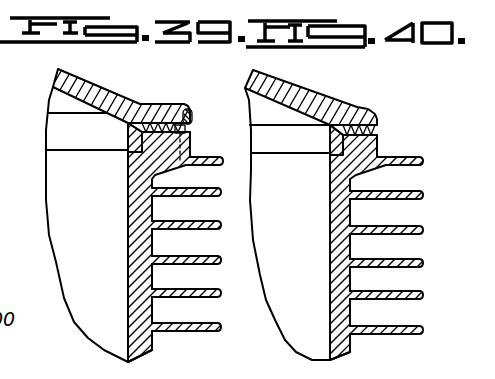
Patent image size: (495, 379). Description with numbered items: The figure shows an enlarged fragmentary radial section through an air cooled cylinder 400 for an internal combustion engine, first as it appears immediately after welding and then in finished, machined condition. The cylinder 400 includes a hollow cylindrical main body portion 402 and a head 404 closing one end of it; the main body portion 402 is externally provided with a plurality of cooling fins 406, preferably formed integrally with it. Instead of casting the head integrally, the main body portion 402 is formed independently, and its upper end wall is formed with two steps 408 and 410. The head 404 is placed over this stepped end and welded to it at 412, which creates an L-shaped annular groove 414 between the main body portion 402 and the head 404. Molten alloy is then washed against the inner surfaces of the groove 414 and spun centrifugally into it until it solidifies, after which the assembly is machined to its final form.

In FIG. 39, the cylinder 400 is at (151, 344).
In FIG. 40, the cylinder 400 is at (353, 345).
In FIG. 39, the main body portion 402 is at (128, 316).
In FIG. 40, the main body portion 402 is at (329, 290).
In FIG. 39, the head 404 is at (84, 87).
In FIG. 40, the head 404 is at (293, 92).
In FIG. 39, the cooling fins 406 is at (206, 298).
In FIG. 40, the cooling fins 406 is at (417, 233).
In FIG. 39, the step 408 is at (128, 151).
In FIG. 40, the step 408 is at (333, 152).
In FIG. 39, the step 410 is at (193, 137).
In FIG. 39, the weld 412 is at (192, 112).
In FIG. 39, the L-shaped annular groove 414 is at (148, 120).
In FIG. 40, the L-shaped annular groove 414 is at (359, 130).